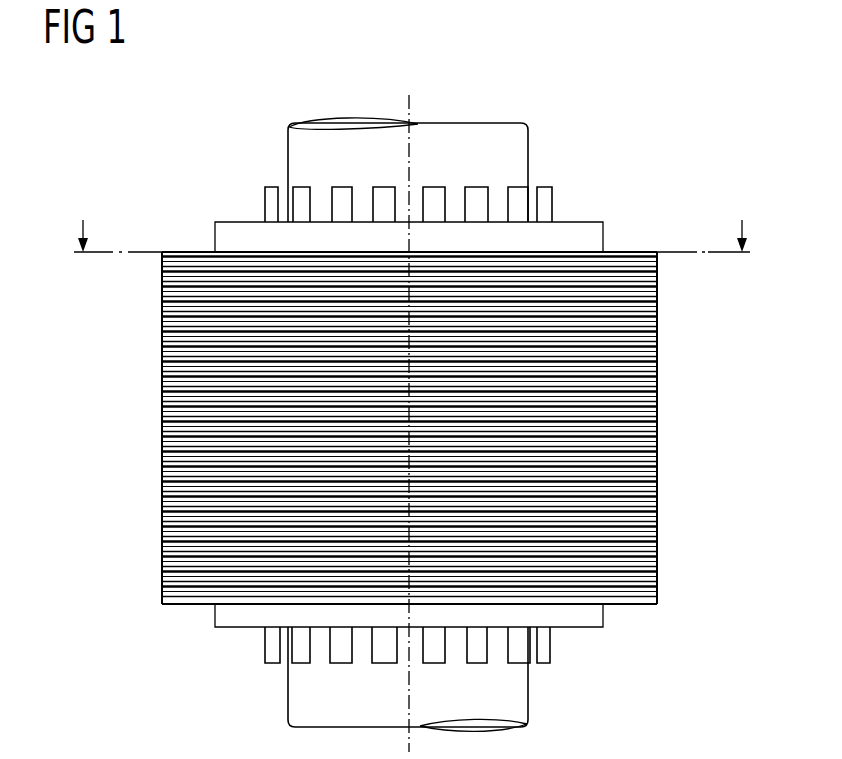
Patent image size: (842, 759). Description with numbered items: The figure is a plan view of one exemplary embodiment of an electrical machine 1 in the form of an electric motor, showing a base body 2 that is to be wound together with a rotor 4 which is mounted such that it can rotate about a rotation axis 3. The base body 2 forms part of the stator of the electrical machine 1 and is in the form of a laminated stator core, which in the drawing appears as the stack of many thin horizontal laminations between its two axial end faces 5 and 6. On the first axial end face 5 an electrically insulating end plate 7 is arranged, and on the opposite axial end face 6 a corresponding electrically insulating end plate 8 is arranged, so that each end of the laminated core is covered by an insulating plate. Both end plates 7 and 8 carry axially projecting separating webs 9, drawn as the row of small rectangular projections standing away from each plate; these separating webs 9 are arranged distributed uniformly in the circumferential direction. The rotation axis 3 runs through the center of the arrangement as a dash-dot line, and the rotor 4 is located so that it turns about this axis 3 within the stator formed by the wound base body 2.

The electrical machine 1 is at (199, 118).
The base body 2 is at (638, 412).
The rotation axis 3 is at (412, 143).
The rotor 4 is at (468, 133).
The axial end face 5 is at (640, 252).
The axial end face 6 is at (638, 606).
The end plate 7 is at (561, 232).
The end plate 8 is at (566, 620).
The separating webs 9 is at (342, 196).